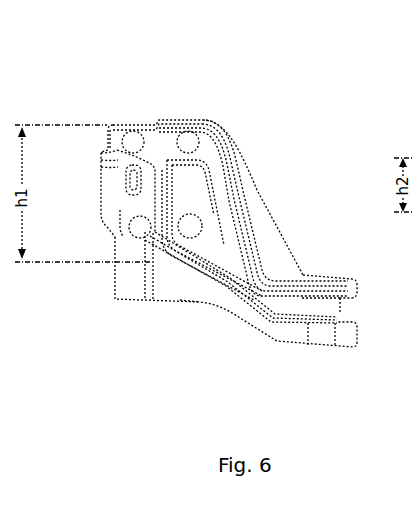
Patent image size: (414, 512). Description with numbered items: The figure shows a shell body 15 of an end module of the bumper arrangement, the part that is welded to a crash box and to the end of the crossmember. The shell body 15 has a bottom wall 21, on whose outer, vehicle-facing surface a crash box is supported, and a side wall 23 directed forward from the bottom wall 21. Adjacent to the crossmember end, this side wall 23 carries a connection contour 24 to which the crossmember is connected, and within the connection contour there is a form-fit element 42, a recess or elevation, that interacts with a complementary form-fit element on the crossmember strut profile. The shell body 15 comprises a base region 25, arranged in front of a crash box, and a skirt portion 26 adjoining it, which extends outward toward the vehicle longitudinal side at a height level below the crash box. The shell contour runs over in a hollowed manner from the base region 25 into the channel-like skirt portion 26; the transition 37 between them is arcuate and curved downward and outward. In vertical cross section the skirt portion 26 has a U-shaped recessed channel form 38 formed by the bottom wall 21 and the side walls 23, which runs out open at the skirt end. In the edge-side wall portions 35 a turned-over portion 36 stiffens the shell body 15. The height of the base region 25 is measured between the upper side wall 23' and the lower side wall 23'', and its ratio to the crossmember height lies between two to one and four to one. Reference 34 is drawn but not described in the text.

The shell body 15 is at (193, 119).
The bottom wall 21 is at (335, 345).
The side wall 23 is at (299, 357).
The upper side wall 23' is at (165, 132).
The lower side wall 23'' is at (223, 258).
The connection contour 24 is at (110, 207).
The base region 25 is at (219, 178).
The skirt portion 26 is at (333, 281).
The bead 34 is at (241, 212).
The edge-side wall portions 35 is at (143, 120).
The turned-over portion 36 is at (168, 120).
The transition 37 is at (244, 310).
The channel form 38 is at (345, 310).
The form-fit element 42 is at (157, 120).